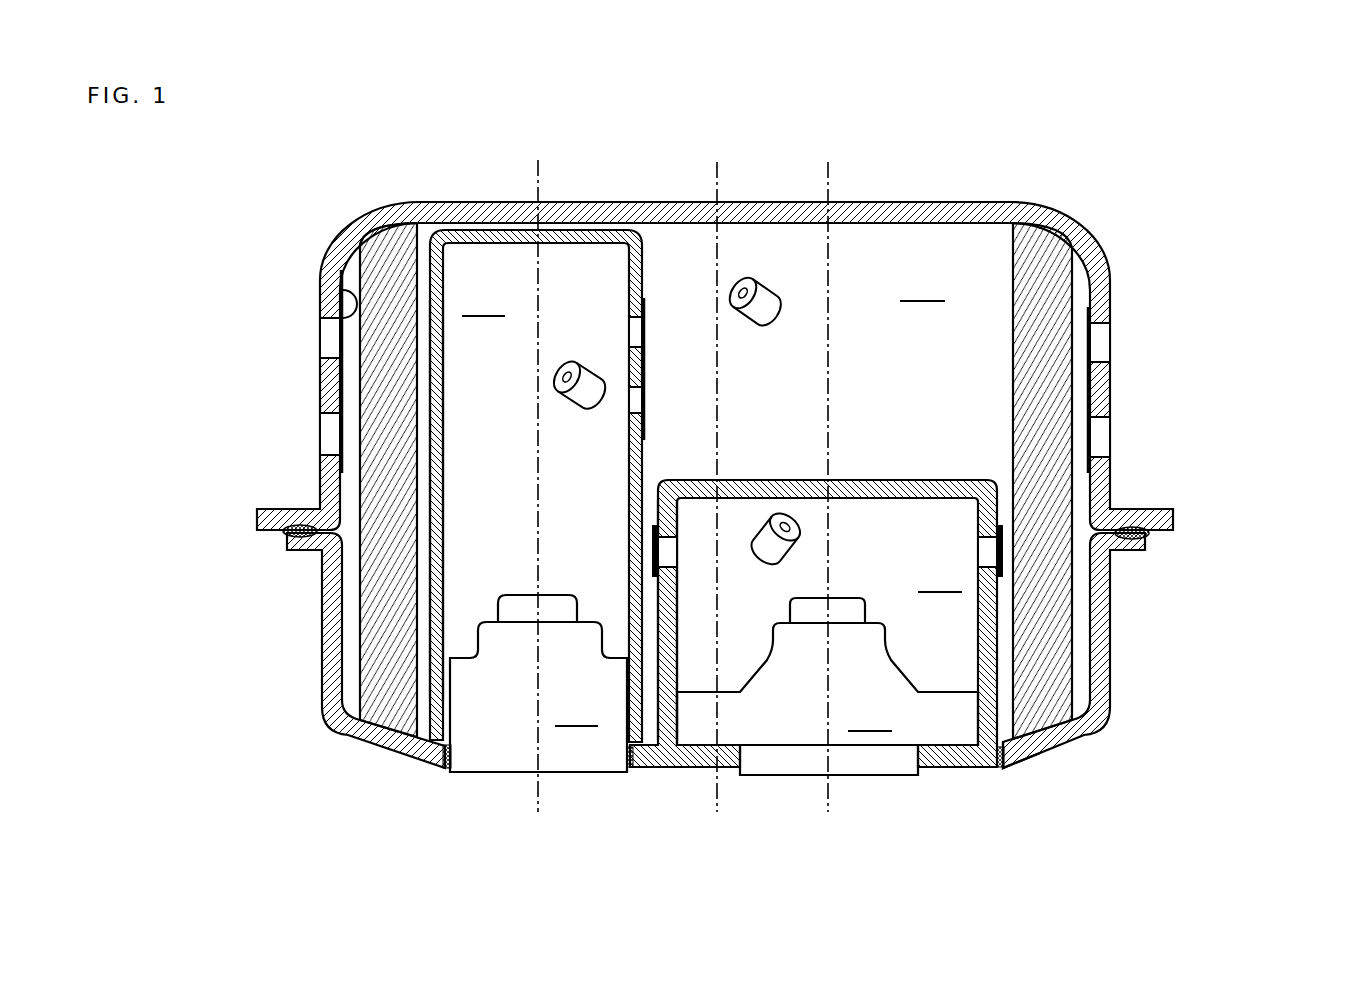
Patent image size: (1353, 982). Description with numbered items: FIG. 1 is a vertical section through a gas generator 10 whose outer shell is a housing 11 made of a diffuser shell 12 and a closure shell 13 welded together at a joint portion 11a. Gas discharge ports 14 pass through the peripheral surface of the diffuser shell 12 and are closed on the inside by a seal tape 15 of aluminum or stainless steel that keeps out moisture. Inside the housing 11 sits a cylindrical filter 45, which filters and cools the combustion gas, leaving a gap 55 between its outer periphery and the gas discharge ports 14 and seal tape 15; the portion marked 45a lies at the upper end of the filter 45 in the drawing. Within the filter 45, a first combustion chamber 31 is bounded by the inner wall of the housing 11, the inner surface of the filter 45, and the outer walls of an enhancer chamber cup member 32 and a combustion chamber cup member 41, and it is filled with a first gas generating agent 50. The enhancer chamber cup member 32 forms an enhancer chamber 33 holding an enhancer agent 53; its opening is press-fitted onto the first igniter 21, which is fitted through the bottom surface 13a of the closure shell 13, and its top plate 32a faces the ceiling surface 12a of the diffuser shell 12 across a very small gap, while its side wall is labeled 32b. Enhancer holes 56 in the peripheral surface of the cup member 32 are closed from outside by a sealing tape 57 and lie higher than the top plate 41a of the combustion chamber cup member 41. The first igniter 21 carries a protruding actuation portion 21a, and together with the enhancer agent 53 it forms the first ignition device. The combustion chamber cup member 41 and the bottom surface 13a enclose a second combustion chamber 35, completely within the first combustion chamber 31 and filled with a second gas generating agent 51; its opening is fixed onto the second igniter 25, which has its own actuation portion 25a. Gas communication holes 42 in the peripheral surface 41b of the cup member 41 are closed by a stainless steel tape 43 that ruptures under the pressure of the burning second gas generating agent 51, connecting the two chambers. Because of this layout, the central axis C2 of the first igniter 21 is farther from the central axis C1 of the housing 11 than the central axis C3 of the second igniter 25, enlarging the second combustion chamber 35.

The gas generator 10 is at (600, 122).
The housing 11 is at (1268, 487).
The joint portion 11a is at (288, 536).
The diffuser shell 12 is at (1108, 495).
The ceiling surface 12a is at (870, 212).
The closure shell 13 is at (1110, 585).
The bottom surface 13a is at (957, 772).
The gas discharge ports 14 is at (327, 438).
The seal tape 15 is at (347, 300).
The first igniter 21 is at (538, 697).
The actuation portion 21a is at (552, 598).
The second igniter 25 is at (827, 699).
The actuation portion 25a is at (838, 605).
The first combustion chamber 31 is at (922, 286).
The enhancer chamber cup member 32 is at (650, 255).
The top plate 32a is at (485, 230).
The side portion of inner wall 32b is at (442, 492).
The enhancer chamber 33 is at (483, 301).
The second combustion chamber 35 is at (940, 577).
The combustion chamber cup member 41 is at (1003, 668).
The top plate 41a is at (878, 479).
The peripheral surface 41b is at (660, 616).
The gas communication holes 42 is at (660, 552).
The stainless steel tape 43 is at (1003, 550).
The cylindrical filter 45 is at (1040, 262).
The top of insulating block 45a is at (386, 240).
The first gas generating agent 50 is at (772, 290).
The second gas generating agent 51 is at (762, 514).
The enhancer agent 53 is at (586, 378).
The gap 55 is at (353, 663).
The enhancer holes 56 is at (630, 403).
The sealing tape 57 is at (645, 330).
The central axis of the housing C1 is at (716, 797).
The central axis of the first igniter C2 is at (537, 796).
The central axis of the second igniter C3 is at (828, 797).